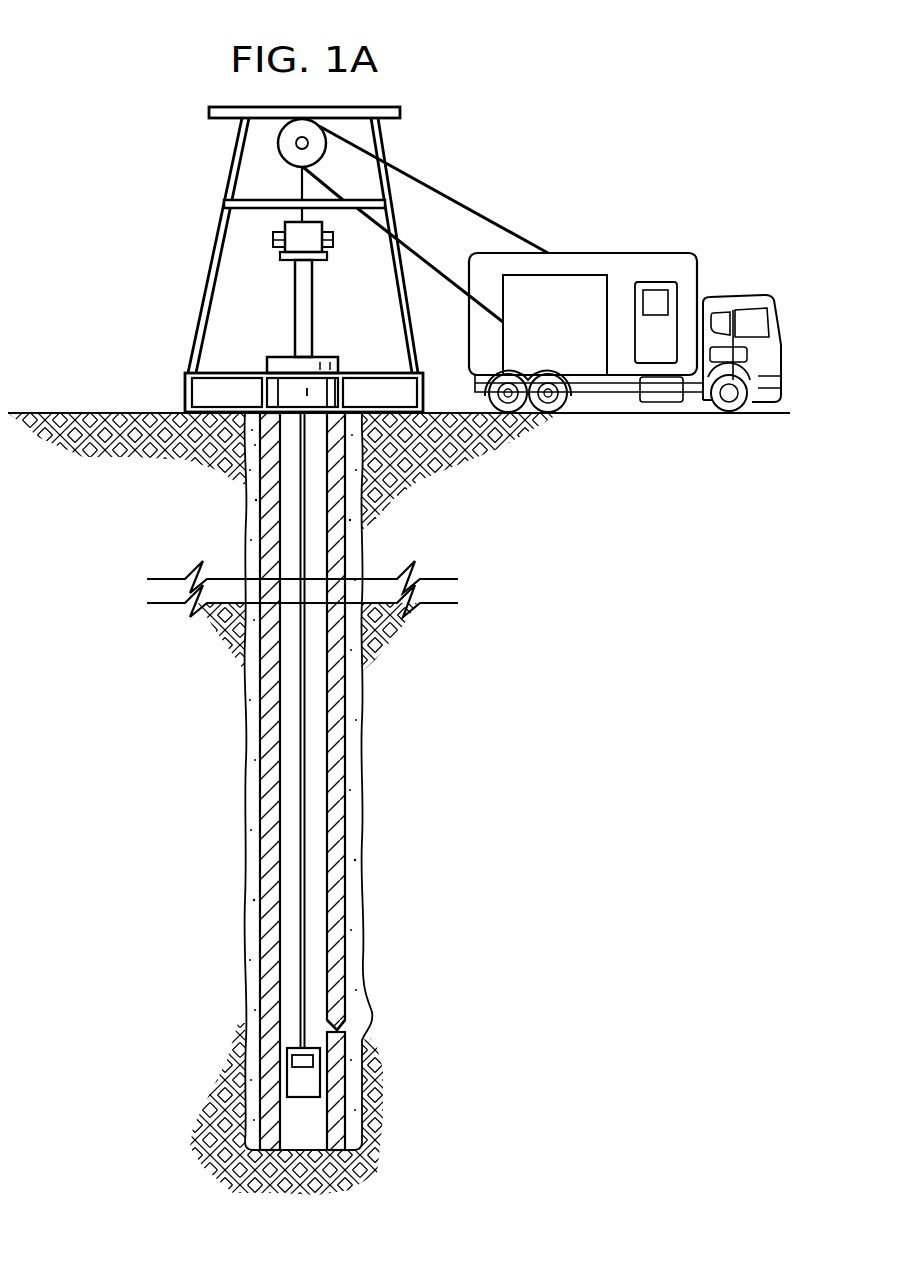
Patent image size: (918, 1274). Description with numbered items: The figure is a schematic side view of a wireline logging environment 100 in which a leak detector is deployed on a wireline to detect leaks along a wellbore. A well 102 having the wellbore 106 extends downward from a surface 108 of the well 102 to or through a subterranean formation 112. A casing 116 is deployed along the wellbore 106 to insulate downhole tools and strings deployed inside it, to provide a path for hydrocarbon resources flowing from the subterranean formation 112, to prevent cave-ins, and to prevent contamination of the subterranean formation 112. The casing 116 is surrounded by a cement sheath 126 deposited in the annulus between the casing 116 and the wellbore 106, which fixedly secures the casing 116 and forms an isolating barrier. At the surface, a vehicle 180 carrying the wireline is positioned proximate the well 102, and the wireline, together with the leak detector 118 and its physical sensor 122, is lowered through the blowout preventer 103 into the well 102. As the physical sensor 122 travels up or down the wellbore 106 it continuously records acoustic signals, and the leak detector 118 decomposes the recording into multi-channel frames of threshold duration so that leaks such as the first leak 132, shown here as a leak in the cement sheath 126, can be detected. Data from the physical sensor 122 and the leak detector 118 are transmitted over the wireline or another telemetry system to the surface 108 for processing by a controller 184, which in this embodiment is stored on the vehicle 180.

The wireline logging environment 100 is at (122, 72).
The well 102 is at (328, 355).
The blowout preventer 103 is at (295, 292).
The wellbore 106 is at (358, 766).
The surface 108 is at (97, 412).
The subterranean formation 112 is at (576, 700).
The casing 116 is at (338, 842).
The leak detector 118 is at (312, 1080).
The physical sensor 122 is at (295, 1062).
The cement sheath 126 is at (355, 721).
The first leak 132 is at (377, 1024).
The vehicle 180 is at (636, 253).
The controller 184 is at (572, 275).